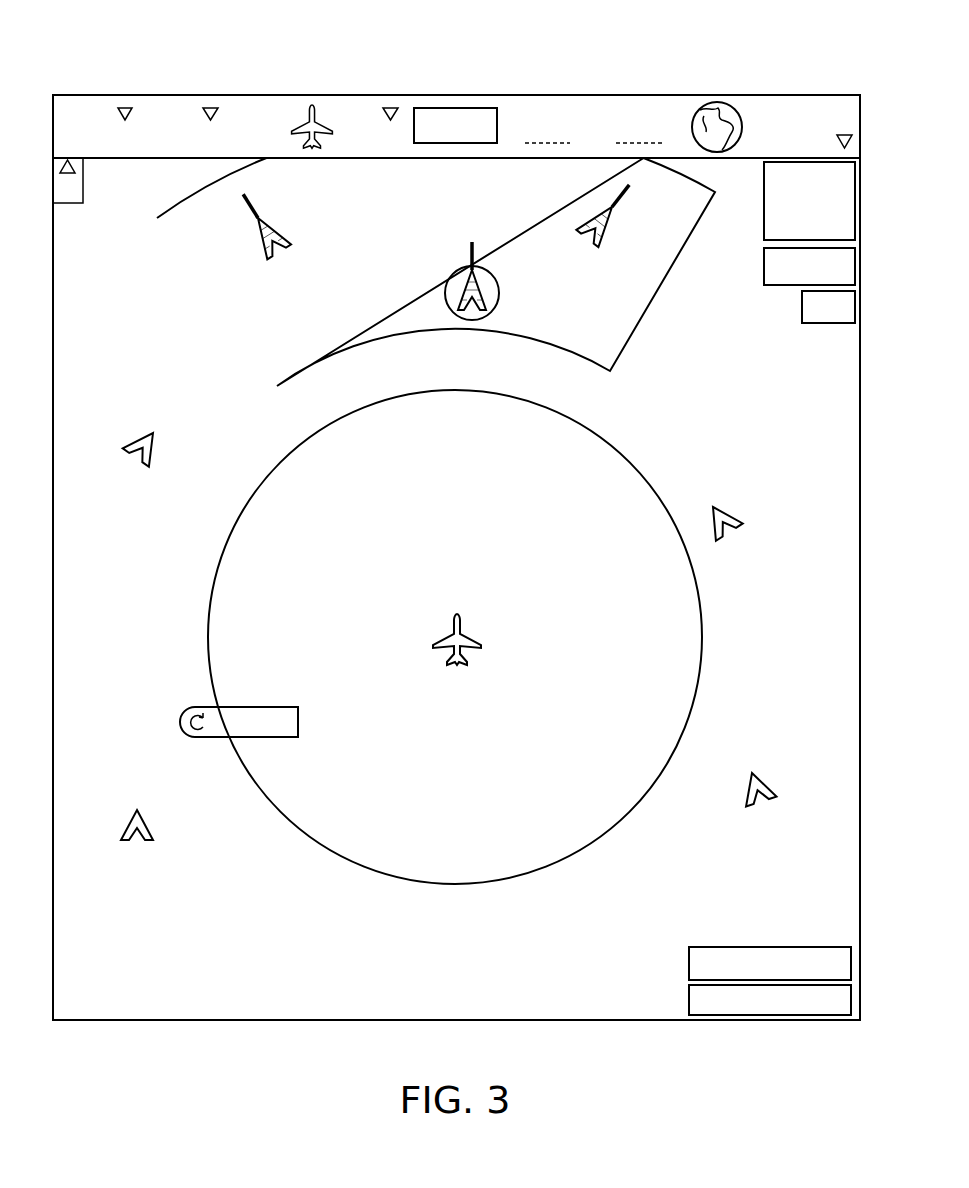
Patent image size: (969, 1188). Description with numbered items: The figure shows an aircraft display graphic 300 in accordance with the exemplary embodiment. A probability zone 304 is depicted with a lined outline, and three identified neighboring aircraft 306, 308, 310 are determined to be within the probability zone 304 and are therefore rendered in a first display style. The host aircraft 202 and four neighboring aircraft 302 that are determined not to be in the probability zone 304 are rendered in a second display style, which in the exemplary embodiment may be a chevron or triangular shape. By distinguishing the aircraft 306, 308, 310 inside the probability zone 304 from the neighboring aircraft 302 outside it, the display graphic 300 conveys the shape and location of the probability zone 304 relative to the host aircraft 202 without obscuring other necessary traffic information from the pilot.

The aircraft display graphic 300 is at (692, 95).
The host aircraft 202 is at (482, 644).
The neighboring aircraft 302 is at (152, 450).
The probability zone 304 is at (642, 323).
The identified neighboring aircraft 306 is at (276, 245).
The identified neighboring aircraft 308 is at (616, 215).
The identified neighboring aircraft 310 is at (475, 248).